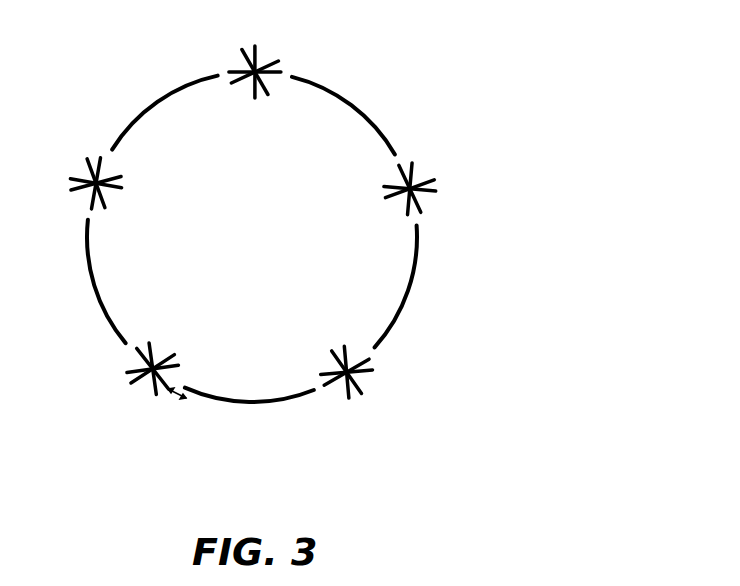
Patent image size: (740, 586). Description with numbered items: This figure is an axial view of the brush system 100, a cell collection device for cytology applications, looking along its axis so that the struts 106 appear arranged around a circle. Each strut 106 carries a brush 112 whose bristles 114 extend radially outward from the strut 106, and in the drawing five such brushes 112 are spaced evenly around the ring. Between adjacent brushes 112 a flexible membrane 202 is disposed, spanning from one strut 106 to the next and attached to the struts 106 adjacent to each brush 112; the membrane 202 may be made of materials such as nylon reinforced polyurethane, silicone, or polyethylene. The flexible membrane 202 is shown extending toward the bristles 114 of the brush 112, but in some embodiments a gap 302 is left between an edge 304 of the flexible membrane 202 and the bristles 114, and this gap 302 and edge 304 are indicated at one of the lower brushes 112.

The brush system 100 is at (463, 71).
The strut 106 is at (411, 187).
The brush 112 is at (420, 183).
The flexible membrane 202 is at (400, 325).
The bristles 114 is at (370, 379).
The edge 304 is at (186, 392).
The gap 302 is at (173, 396).